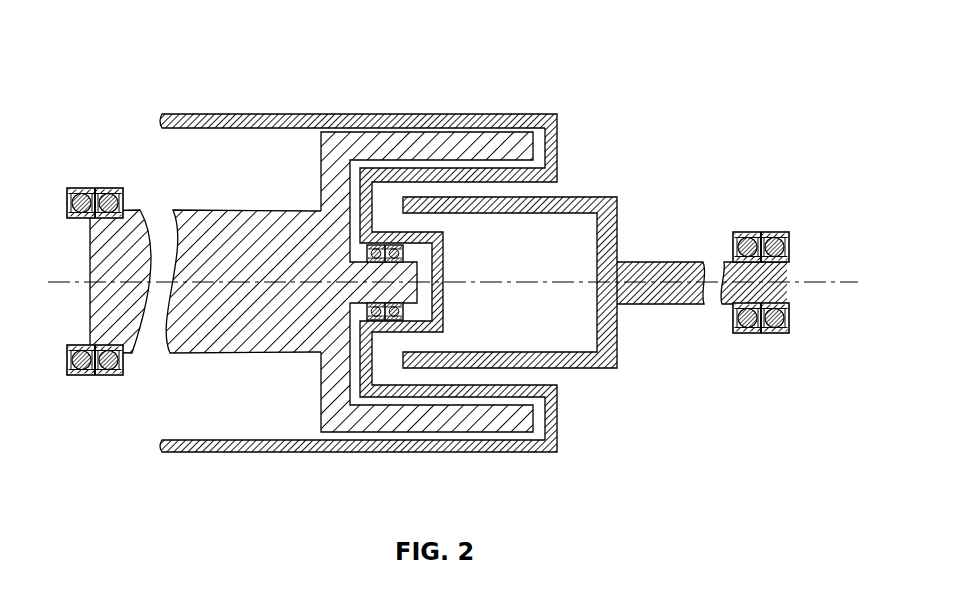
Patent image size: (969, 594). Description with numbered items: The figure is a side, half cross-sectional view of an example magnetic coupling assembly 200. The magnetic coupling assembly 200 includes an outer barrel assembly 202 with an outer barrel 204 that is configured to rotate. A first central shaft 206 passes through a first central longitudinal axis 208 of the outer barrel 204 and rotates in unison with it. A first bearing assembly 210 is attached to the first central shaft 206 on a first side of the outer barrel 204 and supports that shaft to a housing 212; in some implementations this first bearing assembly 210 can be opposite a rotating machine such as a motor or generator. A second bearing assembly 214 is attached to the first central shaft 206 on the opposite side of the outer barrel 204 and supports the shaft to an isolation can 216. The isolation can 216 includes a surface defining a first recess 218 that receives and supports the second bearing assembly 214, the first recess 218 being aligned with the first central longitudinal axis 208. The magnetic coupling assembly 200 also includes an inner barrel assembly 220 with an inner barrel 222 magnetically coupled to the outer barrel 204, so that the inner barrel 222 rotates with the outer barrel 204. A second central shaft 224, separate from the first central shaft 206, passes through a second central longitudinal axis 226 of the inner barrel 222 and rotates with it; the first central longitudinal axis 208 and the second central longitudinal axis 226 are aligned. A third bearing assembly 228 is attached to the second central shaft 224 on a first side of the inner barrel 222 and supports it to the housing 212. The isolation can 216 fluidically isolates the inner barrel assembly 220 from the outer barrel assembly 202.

The magnetic coupling assembly 200 is at (132, 36).
The outer barrel assembly 202 is at (246, 430).
The outer barrel 204 is at (388, 428).
The first central shaft 206 is at (189, 352).
The first central longitudinal axis 208 is at (152, 277).
The first bearing assembly 210 is at (78, 375).
The housing 212 is at (323, 450).
The second bearing assembly 214 is at (404, 316).
The isolation can 216 is at (467, 393).
The first recess 218 is at (423, 252).
The inner barrel assembly 220 is at (677, 438).
The inner barrel 222 is at (582, 363).
The second central shaft 224 is at (660, 298).
The second central longitudinal axis 226 is at (796, 280).
The third bearing assembly 228 is at (757, 331).